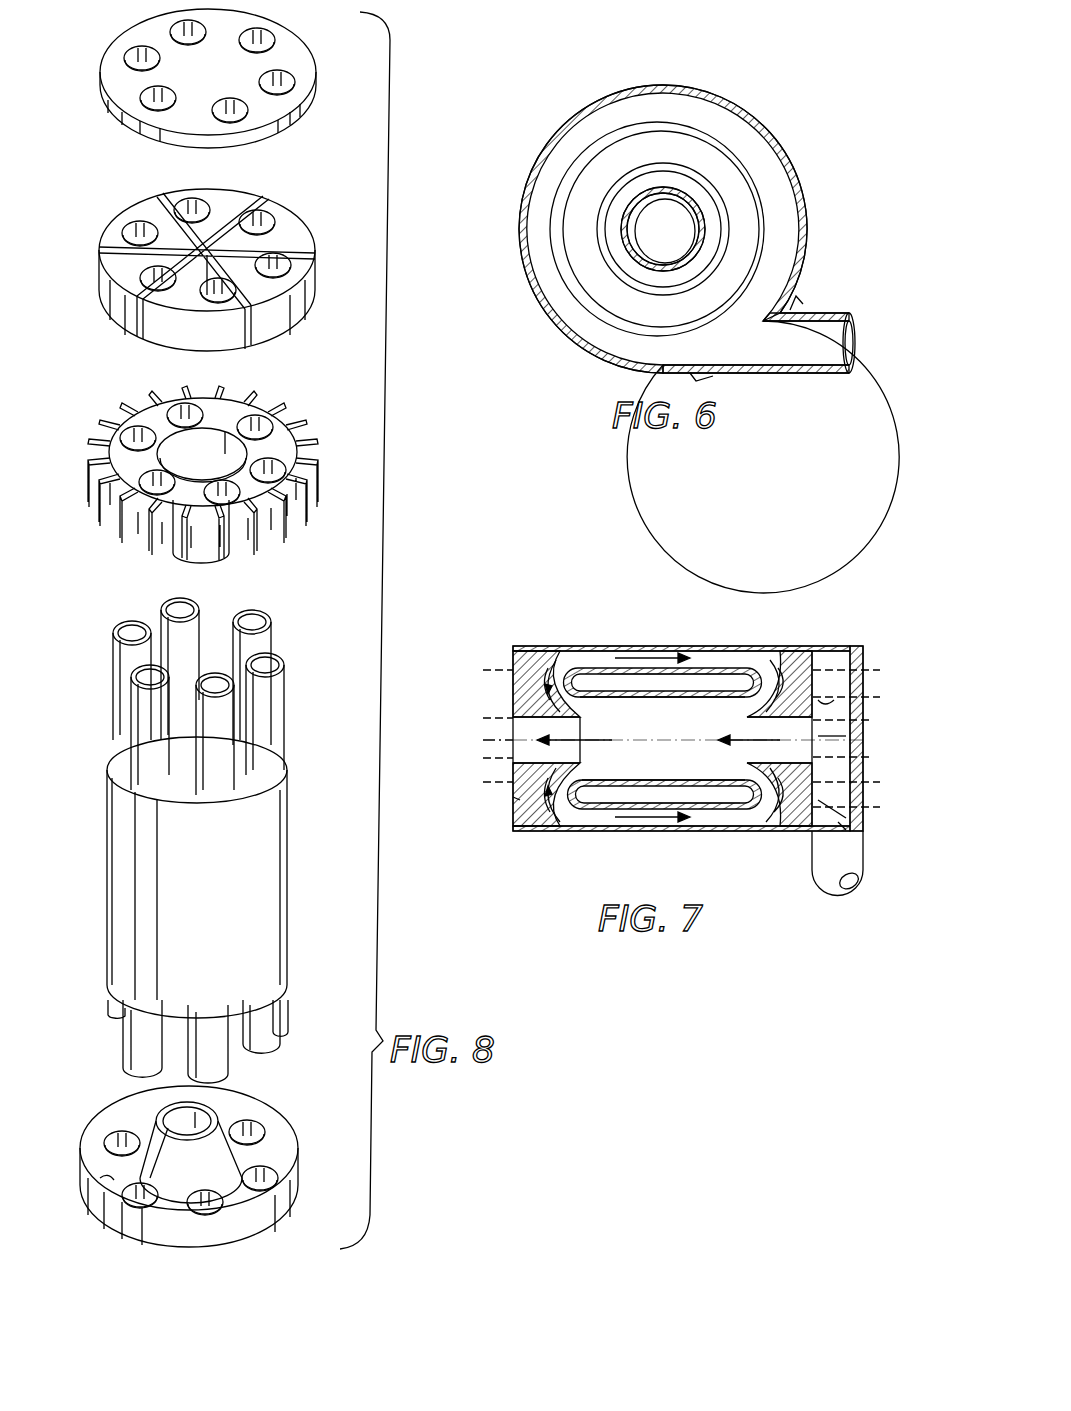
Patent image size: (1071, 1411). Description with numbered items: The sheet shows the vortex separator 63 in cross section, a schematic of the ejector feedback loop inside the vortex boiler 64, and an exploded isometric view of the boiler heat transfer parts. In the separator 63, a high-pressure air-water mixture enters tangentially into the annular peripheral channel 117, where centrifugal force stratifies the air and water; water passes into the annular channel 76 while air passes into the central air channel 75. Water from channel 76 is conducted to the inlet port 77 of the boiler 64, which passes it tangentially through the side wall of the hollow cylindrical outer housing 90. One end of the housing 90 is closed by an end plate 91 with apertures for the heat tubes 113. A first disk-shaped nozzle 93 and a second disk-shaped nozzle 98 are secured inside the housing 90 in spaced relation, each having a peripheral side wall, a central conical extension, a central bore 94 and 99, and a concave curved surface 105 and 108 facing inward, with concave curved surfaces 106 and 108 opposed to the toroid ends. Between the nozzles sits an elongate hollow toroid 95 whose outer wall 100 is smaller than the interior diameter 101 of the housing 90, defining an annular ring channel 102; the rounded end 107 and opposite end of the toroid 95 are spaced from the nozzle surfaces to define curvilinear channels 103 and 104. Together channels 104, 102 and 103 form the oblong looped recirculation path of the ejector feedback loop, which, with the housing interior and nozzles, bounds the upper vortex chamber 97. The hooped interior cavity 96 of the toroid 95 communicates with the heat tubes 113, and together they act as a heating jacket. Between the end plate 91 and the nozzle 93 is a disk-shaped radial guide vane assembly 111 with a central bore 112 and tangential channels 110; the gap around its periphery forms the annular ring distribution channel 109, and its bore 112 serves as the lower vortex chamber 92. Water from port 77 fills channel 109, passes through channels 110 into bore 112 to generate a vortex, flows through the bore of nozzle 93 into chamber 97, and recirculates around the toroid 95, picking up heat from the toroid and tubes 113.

In FIG. 6, the vortex separator 63 is at (562, 124).
In FIG. 7, the vortex boiler 64 is at (528, 648).
In FIG. 6, the central air channel 75 is at (688, 222).
In FIG. 6, the annular water channel 76 is at (752, 237).
In FIG. 7, the annular water channel 76 is at (813, 863).
In FIG. 7, the inlet port 77 is at (852, 837).
In FIG. 7, the outer housing 90 is at (675, 830).
In FIG. 7, the end plate 91 is at (868, 662).
In FIG. 8, the end plate 91 is at (262, 115).
In FIG. 7, the lower vortex chamber 92 is at (850, 820).
In FIG. 8, the lower vortex chamber 92 is at (211, 287).
In FIG. 7, the first disk-shaped nozzle 93 is at (797, 658).
In FIG. 8, the first disk-shaped nozzle 93 is at (198, 487).
In FIG. 8, the central bore of first nozzle 94 is at (208, 553).
In FIG. 7, the hollow toroid 95 is at (715, 669).
In FIG. 8, the hollow toroid 95 is at (201, 840).
In FIG. 7, the hooped interior cavity 96 is at (677, 720).
In FIG. 8, the hooped interior cavity 96 is at (138, 885).
In FIG. 7, the upper vortex chamber 97 is at (668, 662).
In FIG. 7, the second disk-shaped nozzle 98 is at (513, 820).
In FIG. 8, the second disk-shaped nozzle 98 is at (197, 1168).
In FIG. 7, the central bore of second nozzle 99 is at (520, 735).
In FIG. 8, the central bore of second nozzle 99 is at (230, 1098).
In FIG. 7, the outer wall of toroid 100 is at (595, 668).
In FIG. 8, the outer wall of toroid 100 is at (288, 870).
In FIG. 7, the interior diameter of outer housing 101 is at (627, 653).
In FIG. 7, the annular ring channel 102 is at (613, 820).
In FIG. 7, the curvilinear channel 103 is at (780, 800).
In FIG. 7, the curvilinear channel 104 is at (548, 673).
In FIG. 7, the concave curved surface 105 is at (760, 813).
In FIG. 7, the concave curved surface 106 is at (780, 662).
In FIG. 8, the concave curved surface 106 is at (140, 513).
In FIG. 7, the rounded end of toroid 107 is at (560, 810).
In FIG. 8, the rounded end of toroid 107 is at (262, 778).
In FIG. 7, the concave curved surface 108 is at (548, 823).
In FIG. 8, the concave curved surface 108 is at (105, 1180).
In FIG. 7, the annular ring distribution channel 109 is at (822, 823).
In FIG. 7, the tangential channels 110 is at (860, 777).
In FIG. 8, the tangential channels 110 is at (237, 320).
In FIG. 7, the radial guide vane assembly 111 is at (860, 705).
In FIG. 8, the radial guide vane assembly 111 is at (302, 263).
In FIG. 7, the central bore of guide vane assembly 112 is at (800, 747).
In FIG. 8, the central bore of guide vane assembly 112 is at (188, 248).
In FIG. 7, the heat tubes 113 is at (513, 797).
In FIG. 8, the heat tubes 113 is at (275, 695).
In FIG. 6, the annular peripheral channel 117 is at (742, 133).